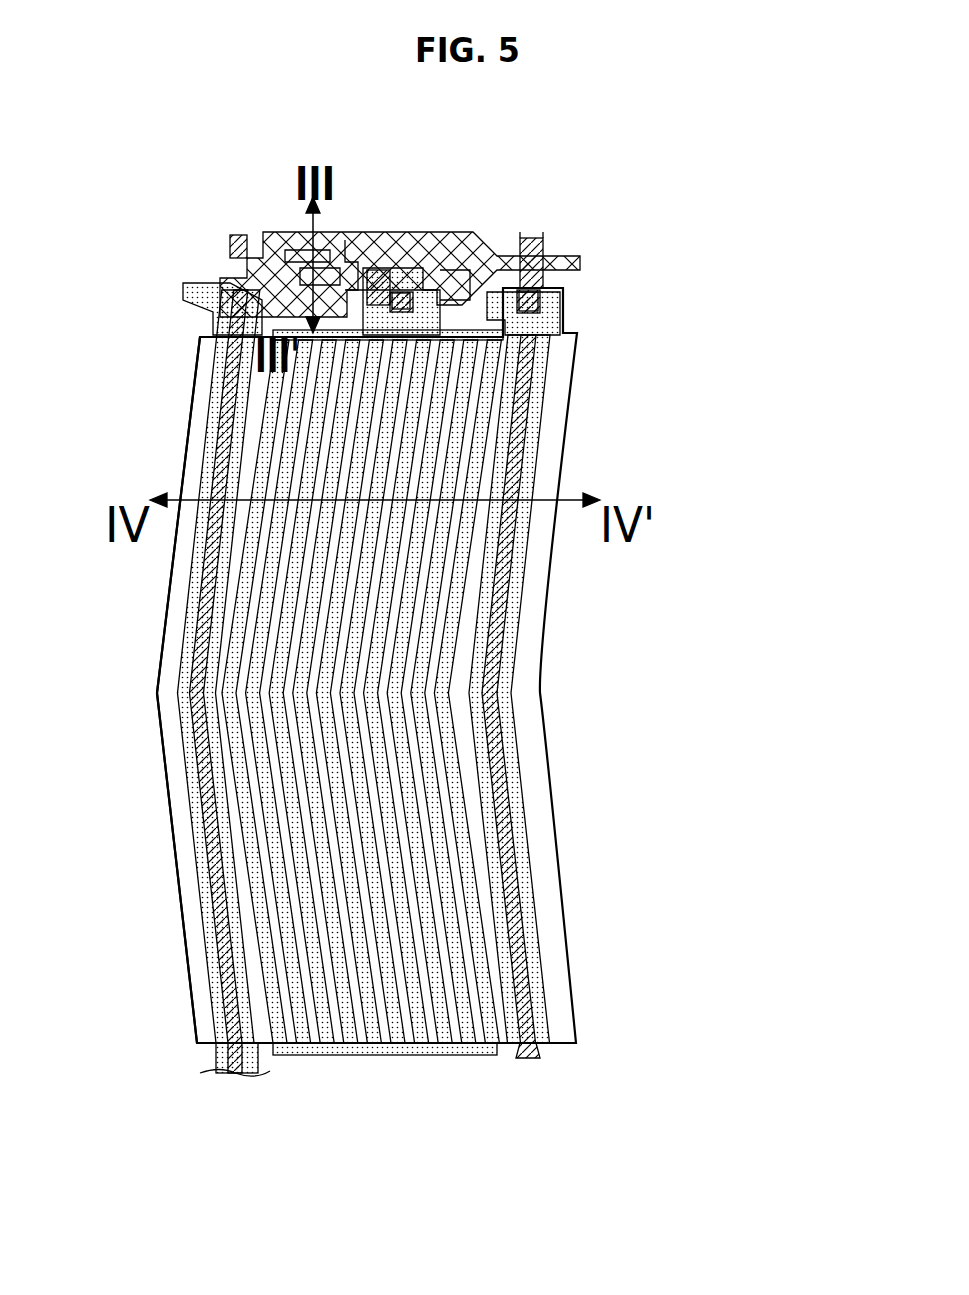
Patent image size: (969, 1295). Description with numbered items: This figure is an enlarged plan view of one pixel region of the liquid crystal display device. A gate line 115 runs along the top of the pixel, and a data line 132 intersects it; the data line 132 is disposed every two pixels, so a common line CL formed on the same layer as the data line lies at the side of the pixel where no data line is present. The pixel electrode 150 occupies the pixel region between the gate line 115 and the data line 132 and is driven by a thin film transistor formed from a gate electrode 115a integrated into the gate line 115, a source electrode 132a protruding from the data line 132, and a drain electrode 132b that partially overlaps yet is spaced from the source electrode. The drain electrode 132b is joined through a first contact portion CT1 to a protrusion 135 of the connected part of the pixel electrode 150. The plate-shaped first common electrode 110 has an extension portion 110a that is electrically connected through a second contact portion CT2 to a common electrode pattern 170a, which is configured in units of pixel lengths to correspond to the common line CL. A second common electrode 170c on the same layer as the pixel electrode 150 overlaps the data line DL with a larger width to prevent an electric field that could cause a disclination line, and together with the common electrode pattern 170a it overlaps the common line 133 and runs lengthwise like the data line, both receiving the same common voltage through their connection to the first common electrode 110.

The first common electrode 110 is at (505, 1045).
The first common electrode extension portion 110a is at (503, 247).
The gate line 115 is at (350, 237).
The gate electrode 115a is at (225, 292).
The data line 132 is at (232, 237).
The source electrode 132a is at (270, 237).
The drain electrode 132b is at (450, 247).
The common line 133 is at (530, 282).
The protrusion 135 is at (410, 250).
The pixel electrode 150 is at (317, 1057).
The common electrode pattern 170a is at (535, 900).
The second common electrode 170c is at (197, 1030).
The data line DL is at (224, 711).
The common line CL is at (514, 731).
The first contact portion CT1 is at (403, 302).
The second contact portion CT2 is at (538, 320).